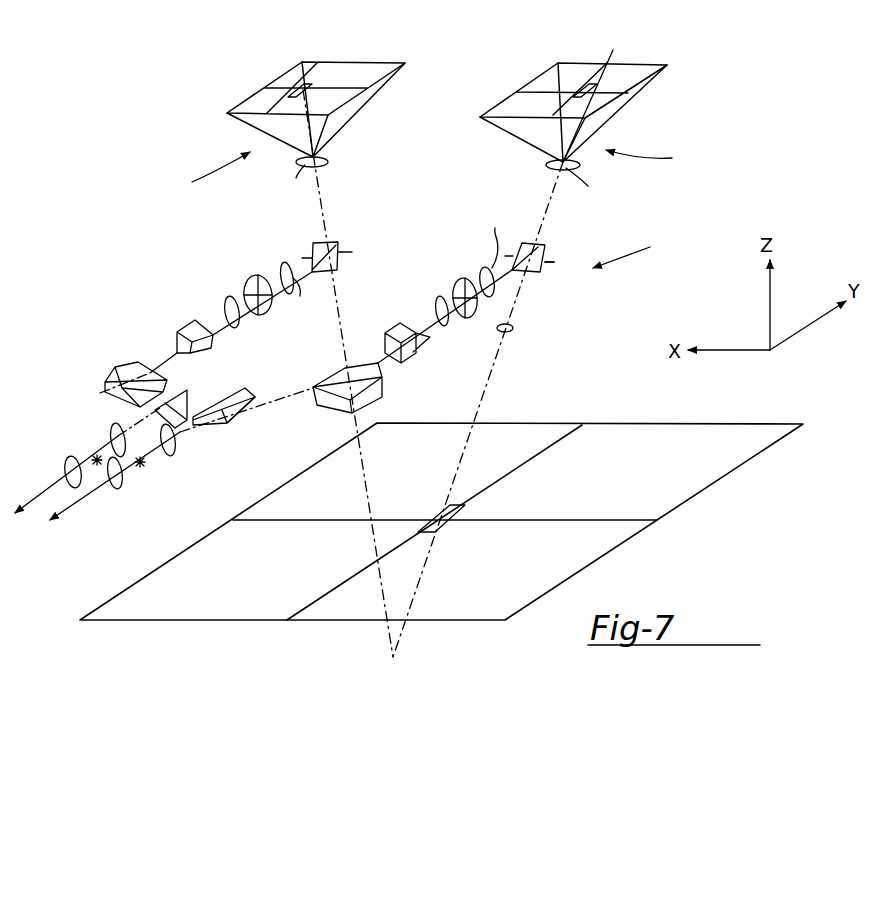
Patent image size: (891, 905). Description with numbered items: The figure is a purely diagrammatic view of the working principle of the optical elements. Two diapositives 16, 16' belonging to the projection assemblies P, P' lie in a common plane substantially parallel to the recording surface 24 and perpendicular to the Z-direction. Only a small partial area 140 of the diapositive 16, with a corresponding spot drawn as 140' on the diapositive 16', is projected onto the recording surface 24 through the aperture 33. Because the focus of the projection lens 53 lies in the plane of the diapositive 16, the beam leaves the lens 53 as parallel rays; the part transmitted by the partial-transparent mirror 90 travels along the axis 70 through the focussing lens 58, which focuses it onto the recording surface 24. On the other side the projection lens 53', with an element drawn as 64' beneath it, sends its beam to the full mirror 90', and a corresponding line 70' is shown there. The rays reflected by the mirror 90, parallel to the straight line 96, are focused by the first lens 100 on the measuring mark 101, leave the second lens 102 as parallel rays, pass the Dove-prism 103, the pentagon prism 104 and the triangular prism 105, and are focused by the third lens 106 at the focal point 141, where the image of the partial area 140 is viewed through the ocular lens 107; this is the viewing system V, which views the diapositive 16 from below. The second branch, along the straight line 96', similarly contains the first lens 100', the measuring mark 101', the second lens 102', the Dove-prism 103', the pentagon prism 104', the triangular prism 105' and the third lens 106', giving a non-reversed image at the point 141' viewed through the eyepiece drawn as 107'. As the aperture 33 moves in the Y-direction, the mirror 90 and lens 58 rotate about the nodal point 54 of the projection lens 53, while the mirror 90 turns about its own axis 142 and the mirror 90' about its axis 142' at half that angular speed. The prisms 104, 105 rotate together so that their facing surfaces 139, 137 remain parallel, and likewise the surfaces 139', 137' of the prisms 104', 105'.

The diapositive 16 is at (590, 102).
The diapositive 16' is at (316, 97).
The recording surface 24 is at (612, 548).
The aperture 33 is at (466, 506).
The projection lens 53 is at (587, 183).
The projection lens 53' is at (285, 179).
The nodal point 54 is at (546, 165).
The focussing lens 58 is at (510, 332).
The aperture (second channel) 64' is at (341, 150).
The axis 70 is at (503, 353).
The optical axis (second channel) 70' is at (348, 373).
The partial-transparent mirror 90 is at (548, 248).
The full mirror 90' is at (342, 242).
The straight line 96 is at (489, 239).
The straight line 96' is at (310, 296).
The first lens 100 is at (472, 267).
The first lens 100' is at (265, 260).
The measuring mark 101 is at (452, 288).
The measuring mark 101' is at (239, 283).
The second lens 102 is at (421, 308).
The second lens 102' is at (211, 300).
The Dove-prism 103 is at (415, 351).
The Dove-prism 103' is at (229, 337).
The pentagon prism 104 is at (341, 406).
The pentagon prism 104' is at (129, 365).
The triangular prism 105 is at (259, 414).
The triangular prism 105' is at (195, 394).
The third lens 106 is at (194, 443).
The third lens 106' is at (96, 428).
The ocular lens 107 is at (126, 487).
The lens (second channel) 107' is at (44, 470).
The surface 137 is at (237, 391).
The surface 137' is at (139, 421).
The surface 139 is at (258, 389).
The surface 139' is at (149, 373).
The partial area 140 is at (602, 62).
The mirror (second channel) 140' is at (334, 58).
The focal point 141 is at (160, 475).
The point 141' is at (67, 441).
The axis 142 is at (568, 278).
The axis 142' is at (368, 265).
The projection assembly P is at (648, 159).
The projection assembly P' is at (208, 171).
The viewing system V is at (630, 251).